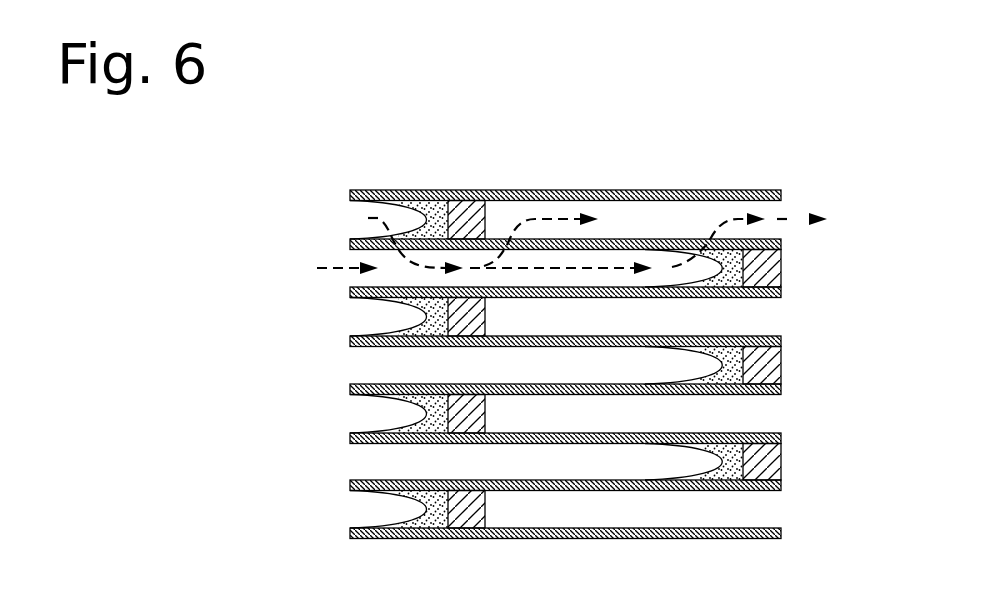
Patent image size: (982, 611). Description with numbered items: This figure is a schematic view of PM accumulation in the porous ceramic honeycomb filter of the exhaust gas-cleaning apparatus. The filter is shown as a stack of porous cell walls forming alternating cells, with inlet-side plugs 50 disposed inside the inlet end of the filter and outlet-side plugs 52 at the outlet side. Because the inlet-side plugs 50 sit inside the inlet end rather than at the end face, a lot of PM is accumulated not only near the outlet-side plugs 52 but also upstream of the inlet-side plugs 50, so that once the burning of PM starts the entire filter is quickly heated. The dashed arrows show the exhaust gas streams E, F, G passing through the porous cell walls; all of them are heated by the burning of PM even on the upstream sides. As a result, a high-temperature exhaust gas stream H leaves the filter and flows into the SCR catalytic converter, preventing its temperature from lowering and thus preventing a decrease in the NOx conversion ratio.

The exhaust gas stream E is at (385, 222).
The exhaust gas stream F is at (551, 219).
The exhaust gas stream G is at (722, 225).
The high-temperature exhaust gas stream H is at (800, 219).
The particulate matter PM is at (433, 211).
The inlet-side plug 50 is at (470, 513).
The outlet-side plug 52 is at (778, 463).